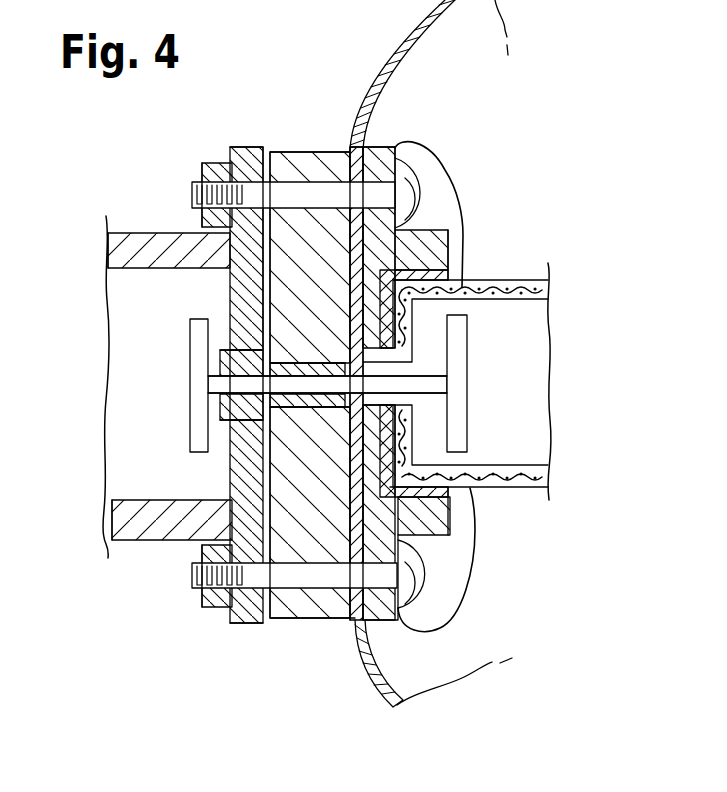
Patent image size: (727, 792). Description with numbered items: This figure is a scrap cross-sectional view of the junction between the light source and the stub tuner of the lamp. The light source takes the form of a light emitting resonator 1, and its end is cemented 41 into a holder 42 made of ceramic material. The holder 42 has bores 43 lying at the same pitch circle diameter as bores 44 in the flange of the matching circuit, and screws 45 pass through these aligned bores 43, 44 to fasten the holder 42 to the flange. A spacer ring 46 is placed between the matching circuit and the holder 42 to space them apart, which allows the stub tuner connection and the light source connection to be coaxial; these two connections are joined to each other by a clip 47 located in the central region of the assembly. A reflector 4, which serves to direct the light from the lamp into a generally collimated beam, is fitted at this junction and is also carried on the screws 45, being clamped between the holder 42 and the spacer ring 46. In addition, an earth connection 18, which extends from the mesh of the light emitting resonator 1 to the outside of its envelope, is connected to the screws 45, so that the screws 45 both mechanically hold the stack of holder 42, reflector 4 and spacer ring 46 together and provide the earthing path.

The light emitting resonator 1 is at (517, 275).
The reflector 4 is at (428, 40).
The earth connection 18 is at (460, 208).
The cement 41 is at (412, 272).
The holder 42 is at (432, 522).
The bores 43 is at (410, 193).
The bores 44 is at (247, 213).
The screws 45 is at (295, 163).
The spacer ring 46 is at (303, 605).
The clip 47 is at (303, 362).